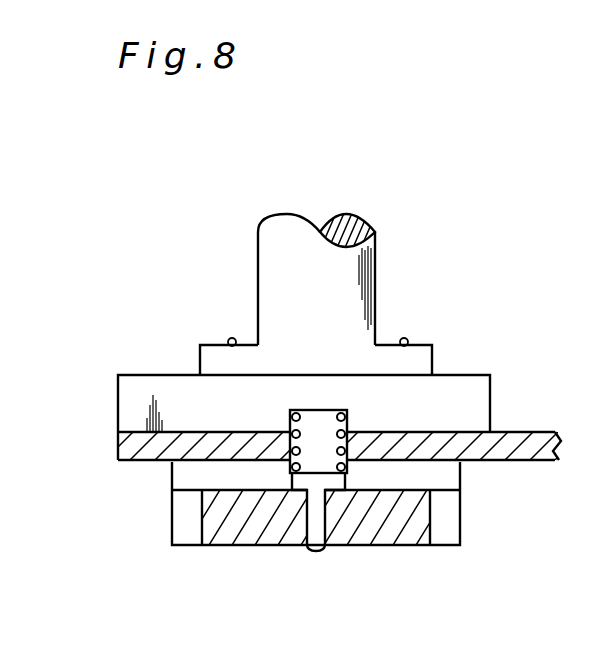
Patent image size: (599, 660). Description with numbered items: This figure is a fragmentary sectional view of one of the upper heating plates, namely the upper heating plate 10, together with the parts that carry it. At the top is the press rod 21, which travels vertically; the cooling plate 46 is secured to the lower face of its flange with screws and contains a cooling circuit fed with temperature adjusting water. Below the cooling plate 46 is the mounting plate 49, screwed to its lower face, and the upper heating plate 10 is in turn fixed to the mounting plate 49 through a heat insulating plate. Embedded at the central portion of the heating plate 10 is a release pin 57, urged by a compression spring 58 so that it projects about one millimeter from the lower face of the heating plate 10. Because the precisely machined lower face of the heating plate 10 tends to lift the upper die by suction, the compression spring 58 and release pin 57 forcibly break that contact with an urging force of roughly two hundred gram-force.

The press rod 21 is at (350, 222).
The cooling plate 46 is at (478, 383).
The mounting plate 49 is at (130, 445).
The compression spring 58 is at (290, 475).
The release pin 57 is at (318, 549).
The upper heating plate 10 is at (260, 533).